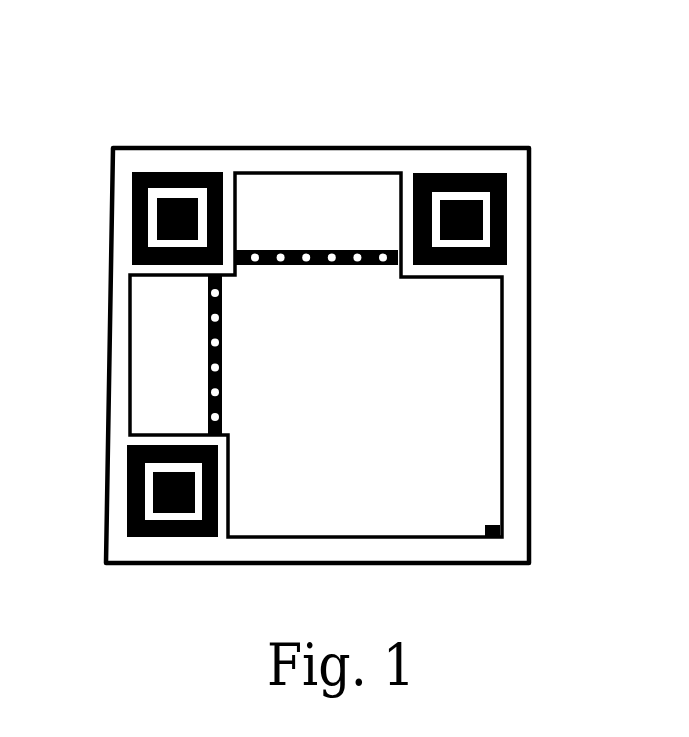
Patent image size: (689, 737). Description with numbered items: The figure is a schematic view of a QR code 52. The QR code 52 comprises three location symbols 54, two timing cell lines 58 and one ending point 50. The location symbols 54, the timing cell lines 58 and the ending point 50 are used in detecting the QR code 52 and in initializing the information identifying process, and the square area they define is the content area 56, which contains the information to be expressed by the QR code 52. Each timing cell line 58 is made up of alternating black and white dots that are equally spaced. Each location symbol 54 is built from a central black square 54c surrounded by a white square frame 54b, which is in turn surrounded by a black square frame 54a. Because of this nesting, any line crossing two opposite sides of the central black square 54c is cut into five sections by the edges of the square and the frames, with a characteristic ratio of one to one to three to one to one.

The QR code 52 is at (386, 126).
The location symbol 54 is at (132, 219).
The black square frame 54a is at (455, 173).
The white square frame 54b is at (509, 183).
The central black square 54c is at (508, 238).
The timing cell line 58 is at (263, 250).
The content area 56 is at (443, 518).
The ending point 50 is at (498, 533).